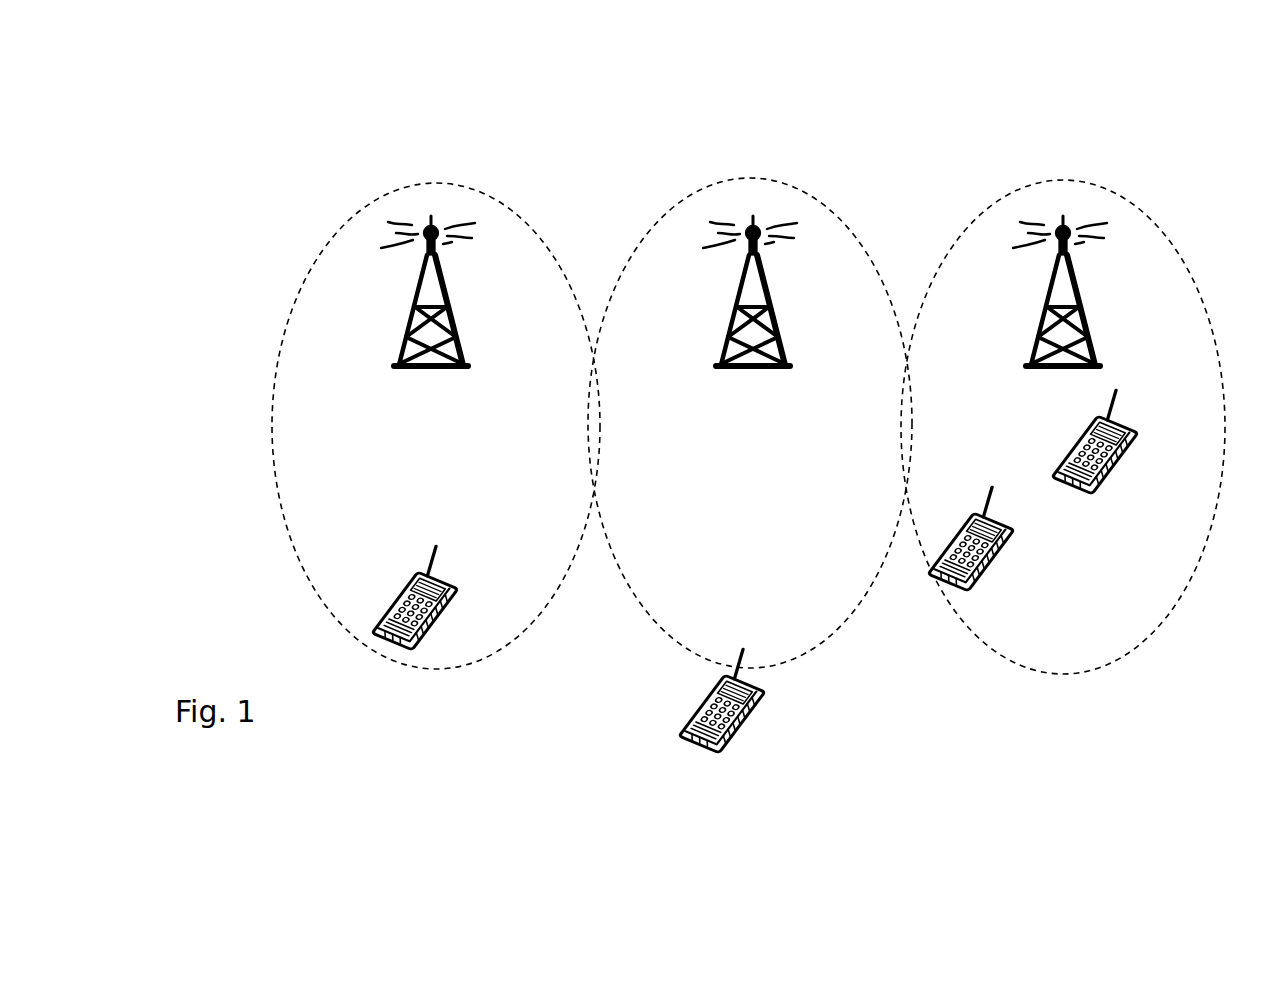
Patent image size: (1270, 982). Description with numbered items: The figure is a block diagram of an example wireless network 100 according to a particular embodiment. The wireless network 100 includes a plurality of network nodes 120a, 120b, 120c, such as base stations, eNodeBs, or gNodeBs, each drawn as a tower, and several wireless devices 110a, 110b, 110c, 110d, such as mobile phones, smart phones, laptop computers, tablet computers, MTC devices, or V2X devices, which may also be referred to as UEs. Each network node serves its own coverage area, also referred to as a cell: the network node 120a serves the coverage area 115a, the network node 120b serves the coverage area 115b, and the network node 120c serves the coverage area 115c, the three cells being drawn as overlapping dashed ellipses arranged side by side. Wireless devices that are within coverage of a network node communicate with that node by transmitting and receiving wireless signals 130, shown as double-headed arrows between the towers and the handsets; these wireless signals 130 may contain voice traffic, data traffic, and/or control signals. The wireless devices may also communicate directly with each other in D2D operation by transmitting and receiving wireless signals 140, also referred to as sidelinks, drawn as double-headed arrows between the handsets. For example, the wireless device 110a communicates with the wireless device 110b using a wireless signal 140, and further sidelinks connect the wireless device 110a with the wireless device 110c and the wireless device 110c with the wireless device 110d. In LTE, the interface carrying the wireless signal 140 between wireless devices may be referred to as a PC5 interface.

The wireless network 100 is at (606, 136).
The wireless device 110a is at (380, 624).
The wireless device 110b is at (753, 738).
The wireless device 110c is at (995, 570).
The wireless device 110d is at (1128, 478).
The coverage area 115a is at (436, 426).
The coverage area 115b is at (750, 423).
The coverage area 115c is at (1063, 427).
The network node 120a is at (425, 320).
The network node 120b is at (746, 316).
The network node 120c is at (1043, 332).
The wireless signals 130 is at (438, 548).
The wireless signal 140 is at (926, 539).